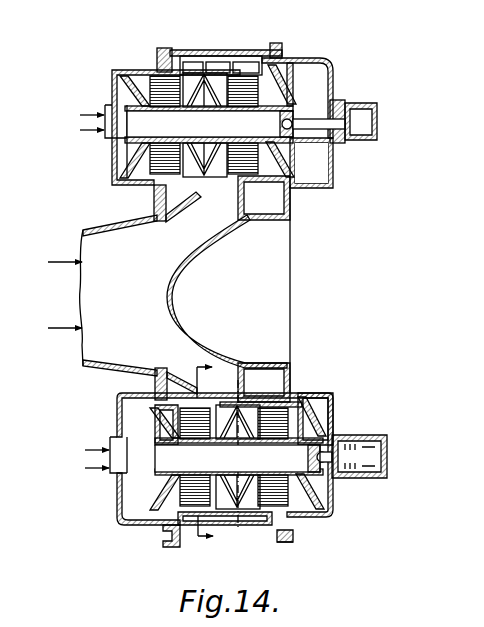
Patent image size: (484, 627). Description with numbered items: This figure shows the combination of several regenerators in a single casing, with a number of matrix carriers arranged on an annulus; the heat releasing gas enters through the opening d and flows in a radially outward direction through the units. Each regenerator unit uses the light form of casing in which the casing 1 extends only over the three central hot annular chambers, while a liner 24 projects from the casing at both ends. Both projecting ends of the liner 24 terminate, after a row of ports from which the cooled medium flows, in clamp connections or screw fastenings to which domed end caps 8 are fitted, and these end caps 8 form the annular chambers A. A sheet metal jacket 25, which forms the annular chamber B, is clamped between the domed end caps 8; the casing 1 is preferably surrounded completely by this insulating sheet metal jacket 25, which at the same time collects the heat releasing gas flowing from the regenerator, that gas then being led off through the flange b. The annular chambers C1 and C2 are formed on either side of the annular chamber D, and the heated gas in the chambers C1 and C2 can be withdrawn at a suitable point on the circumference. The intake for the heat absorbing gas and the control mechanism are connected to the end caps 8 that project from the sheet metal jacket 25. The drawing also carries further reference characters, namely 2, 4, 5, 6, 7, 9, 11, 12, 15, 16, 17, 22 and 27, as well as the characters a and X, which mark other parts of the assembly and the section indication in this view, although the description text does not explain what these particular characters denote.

The casing 1 is at (153, 206).
The rotor arm 2 is at (145, 100).
The disc 4 is at (278, 90).
The disc 5 is at (288, 104).
The disc 6 is at (285, 84).
The shaft 7 is at (281, 124).
The domed end cap 8 is at (325, 68).
The hub 9 is at (360, 103).
The end cap 11 is at (378, 122).
The duct wall 12 is at (183, 260).
The chamber 15 is at (313, 124).
The chamber wall 16 is at (311, 163).
The pin 17 is at (346, 142).
The flange 22 is at (338, 143).
The liner 24 is at (226, 186).
The sheet metal jacket 25 is at (164, 50).
The housing 27 is at (160, 70).
The annular chamber A is at (130, 84).
The annular chamber B is at (178, 50).
The annular chamber C1 is at (203, 62).
The annular chamber C2 is at (245, 62).
The annular chamber D is at (224, 62).
The inlet passage a is at (125, 134).
The flange b is at (250, 537).
The opening d is at (178, 249).
The section line X is at (213, 457).